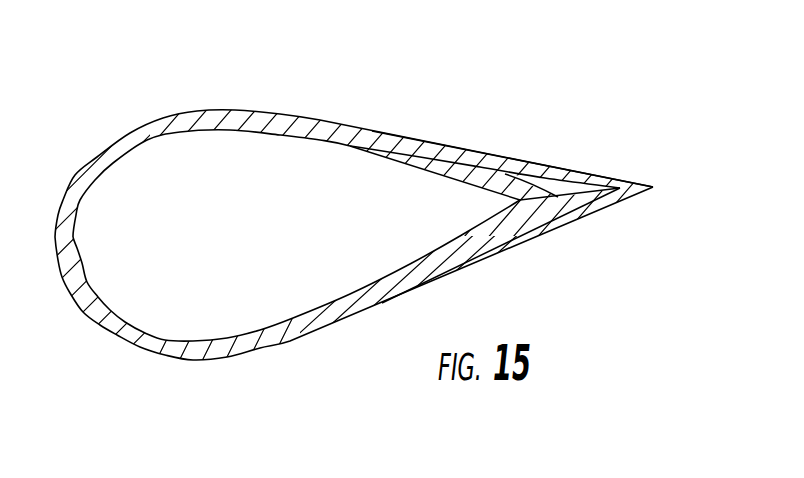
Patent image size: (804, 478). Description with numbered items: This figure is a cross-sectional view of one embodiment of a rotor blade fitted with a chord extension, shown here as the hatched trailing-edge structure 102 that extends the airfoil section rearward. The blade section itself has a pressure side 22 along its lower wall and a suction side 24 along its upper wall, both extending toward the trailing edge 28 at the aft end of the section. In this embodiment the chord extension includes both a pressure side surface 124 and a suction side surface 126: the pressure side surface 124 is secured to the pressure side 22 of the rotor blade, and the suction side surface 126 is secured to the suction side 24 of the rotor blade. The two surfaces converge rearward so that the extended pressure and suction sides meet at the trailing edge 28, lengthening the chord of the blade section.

The pressure side 22 is at (287, 342).
The suction side 24 is at (314, 112).
The trailing edge 28 is at (567, 198).
The trailing edge insert 102 is at (568, 170).
The pressure side surface 124 is at (507, 255).
The suction side surface 126 is at (525, 157).